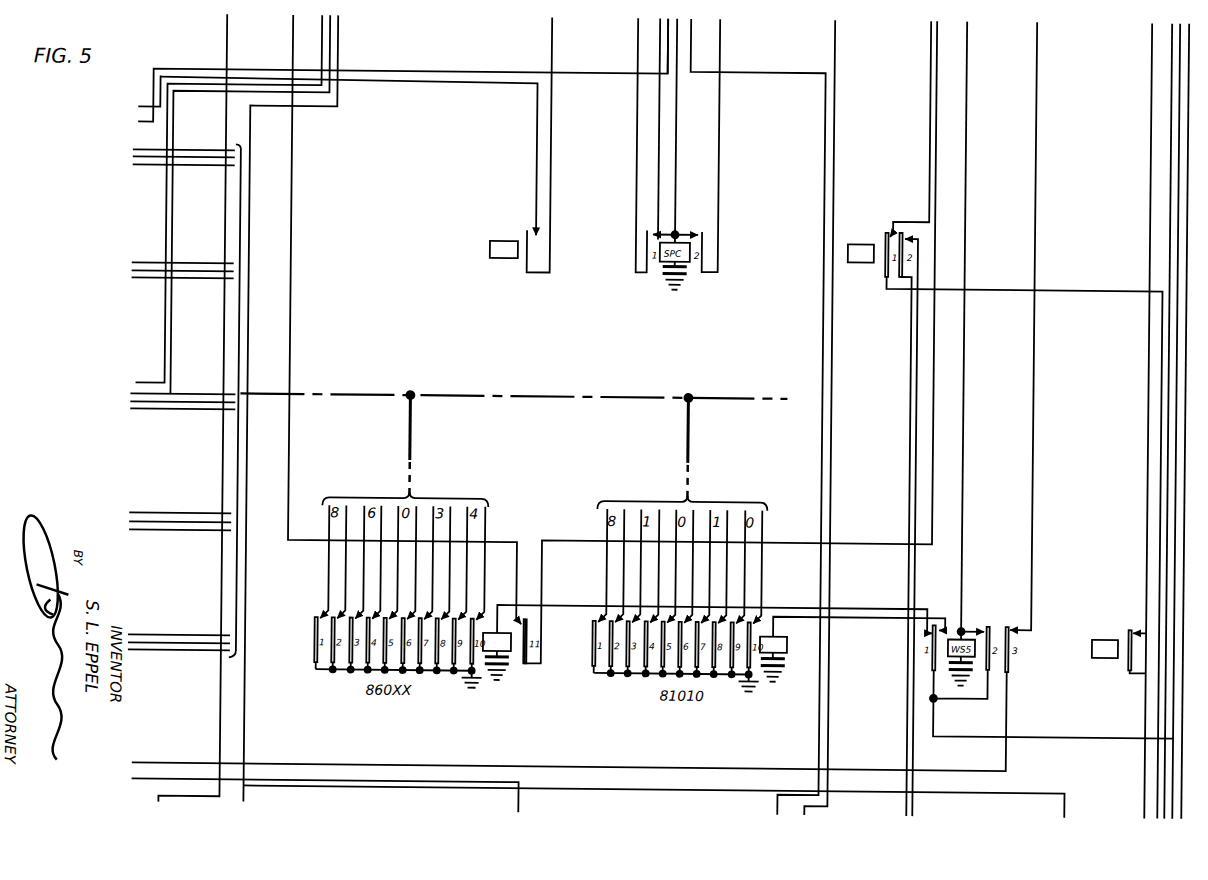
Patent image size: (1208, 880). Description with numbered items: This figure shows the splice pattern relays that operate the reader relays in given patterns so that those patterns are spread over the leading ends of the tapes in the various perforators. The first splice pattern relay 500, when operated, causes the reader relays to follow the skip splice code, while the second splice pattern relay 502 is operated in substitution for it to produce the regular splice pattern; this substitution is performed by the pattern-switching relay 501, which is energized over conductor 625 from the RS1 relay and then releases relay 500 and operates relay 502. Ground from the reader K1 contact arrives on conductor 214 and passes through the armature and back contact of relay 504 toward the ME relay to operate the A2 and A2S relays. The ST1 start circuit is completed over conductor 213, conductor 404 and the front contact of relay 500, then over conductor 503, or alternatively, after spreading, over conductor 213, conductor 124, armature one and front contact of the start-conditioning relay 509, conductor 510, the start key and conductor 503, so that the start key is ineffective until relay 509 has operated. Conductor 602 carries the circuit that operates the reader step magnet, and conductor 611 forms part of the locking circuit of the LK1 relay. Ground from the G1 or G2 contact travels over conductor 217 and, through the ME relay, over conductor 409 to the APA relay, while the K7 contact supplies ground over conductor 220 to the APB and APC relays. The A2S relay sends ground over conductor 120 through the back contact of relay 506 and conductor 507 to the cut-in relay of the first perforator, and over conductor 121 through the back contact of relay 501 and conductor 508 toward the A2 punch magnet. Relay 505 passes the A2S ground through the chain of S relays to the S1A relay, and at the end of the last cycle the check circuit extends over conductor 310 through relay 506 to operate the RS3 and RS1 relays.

The conductor 213 is at (197, 73).
The conductor 214 is at (401, 86).
The conductor 611 is at (334, 110).
The conductor 404 is at (290, 170).
The ESP relay 504 is at (512, 242).
The SPC relay 509 is at (660, 262).
The conductor 510 is at (656, 172).
The conductor 124 is at (634, 150).
The conductor 602 is at (832, 45).
The conductor 120 is at (927, 156).
The WS3 relay 506 is at (870, 242).
The conductor 507 is at (1100, 287).
The conductor 625 is at (1185, 362).
The conductor 409 is at (1168, 398).
The conductor 310 is at (909, 390).
The conductor 121 is at (1035, 470).
The conductor 503 is at (878, 542).
The SPA relay 500 is at (516, 653).
The SPB relay 502 is at (790, 650).
The WS5 relay 501 is at (967, 627).
The WS4 relay 505 is at (1111, 635).
The conductor 508 is at (1010, 688).
The conductor 217 is at (523, 797).
The conductor 220 is at (645, 790).